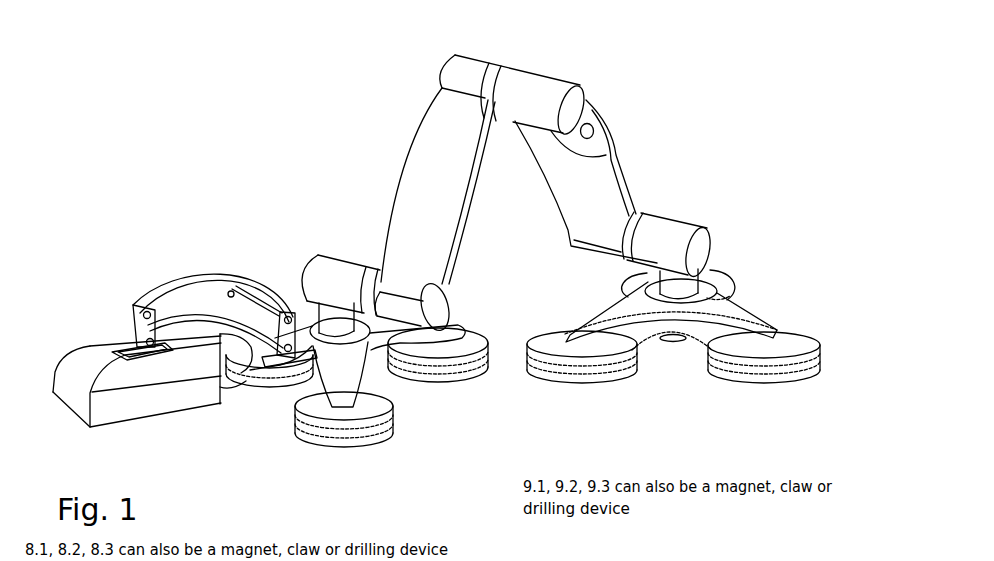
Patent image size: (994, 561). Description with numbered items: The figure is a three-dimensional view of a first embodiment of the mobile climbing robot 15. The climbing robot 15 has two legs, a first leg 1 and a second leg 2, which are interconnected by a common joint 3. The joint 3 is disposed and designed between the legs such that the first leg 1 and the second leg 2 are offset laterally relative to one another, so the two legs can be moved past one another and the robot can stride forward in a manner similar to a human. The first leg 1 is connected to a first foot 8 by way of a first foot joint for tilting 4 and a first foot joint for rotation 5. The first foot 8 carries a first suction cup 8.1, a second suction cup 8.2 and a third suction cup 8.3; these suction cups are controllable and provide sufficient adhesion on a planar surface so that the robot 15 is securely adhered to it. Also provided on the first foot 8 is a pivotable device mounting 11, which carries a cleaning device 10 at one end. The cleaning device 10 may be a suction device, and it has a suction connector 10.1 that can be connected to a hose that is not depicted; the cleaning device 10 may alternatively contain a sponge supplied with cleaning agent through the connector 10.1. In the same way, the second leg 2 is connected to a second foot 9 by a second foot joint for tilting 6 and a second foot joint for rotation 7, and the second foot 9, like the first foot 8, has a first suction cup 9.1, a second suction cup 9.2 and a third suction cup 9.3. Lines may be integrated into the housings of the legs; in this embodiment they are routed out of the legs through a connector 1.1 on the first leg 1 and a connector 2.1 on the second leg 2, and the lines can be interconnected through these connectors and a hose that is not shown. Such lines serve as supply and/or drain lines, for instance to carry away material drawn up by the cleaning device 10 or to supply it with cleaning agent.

The first leg 1 is at (412, 148).
The connector 1.1 is at (420, 121).
The second leg 2 is at (620, 162).
The connector 2.1 is at (593, 127).
The common joint 3 is at (540, 77).
The first foot joint for tilting 4 is at (340, 260).
The first foot joint for rotation 5 is at (316, 318).
The second foot joint for tilting 6 is at (677, 220).
The second foot joint for rotation 7 is at (697, 287).
The first foot 8 is at (413, 417).
The first suction cup 8.1 is at (273, 380).
The second suction cup 8.2 is at (297, 432).
The third suction cup 8.3 is at (443, 385).
The second foot 9 is at (582, 303).
The first suction cup 9.1 is at (583, 385).
The second suction cup 9.2 is at (750, 385).
The third suction cup 9.3 is at (720, 273).
The cleaning device 10 is at (138, 413).
The suction connector 10.1 is at (237, 380).
The pivotable device mounting 11 is at (203, 273).
The mobile climbing robot 15 is at (249, 121).